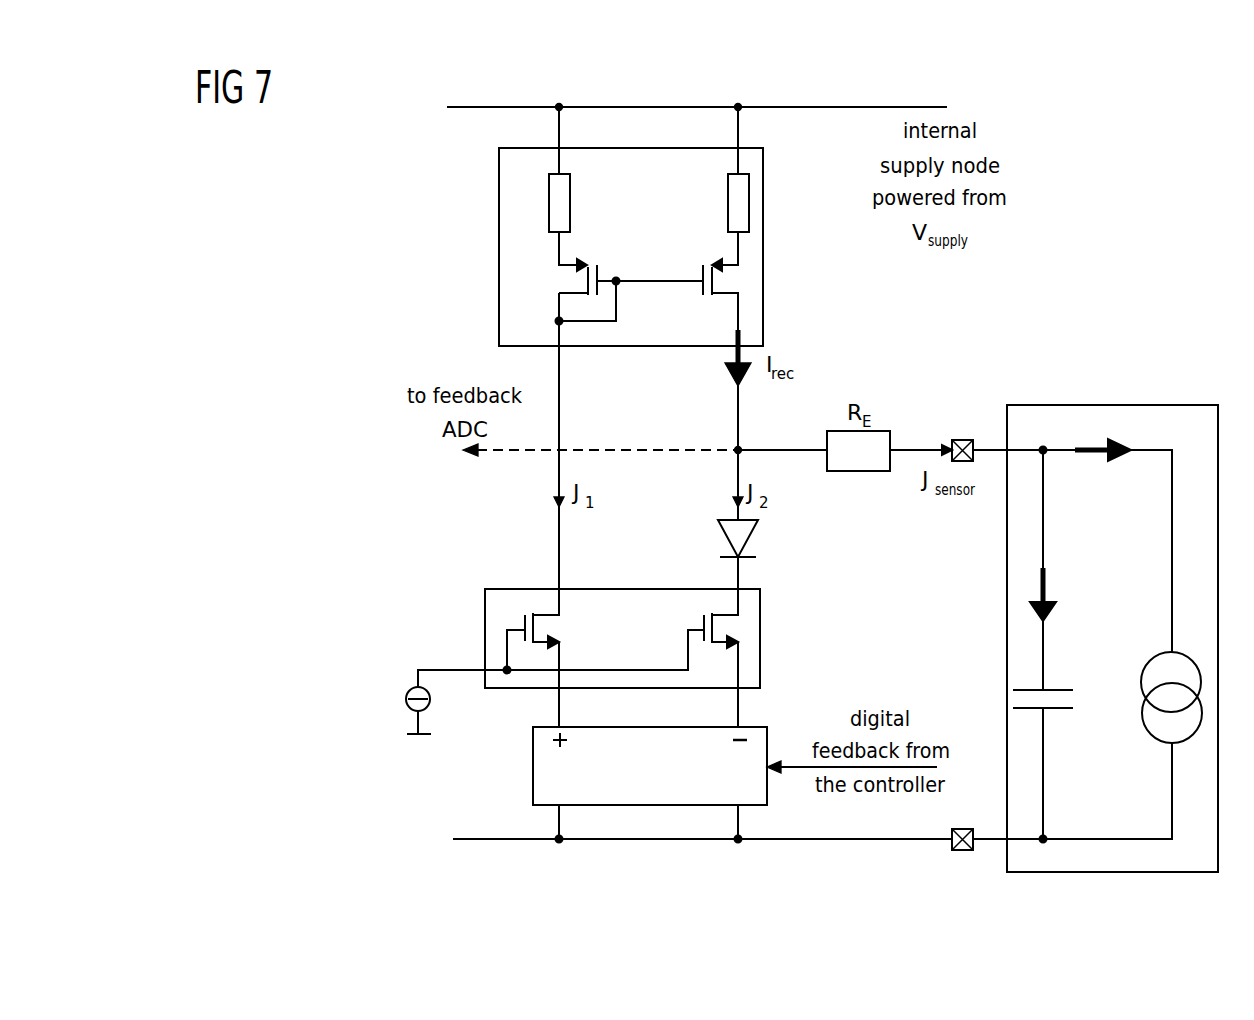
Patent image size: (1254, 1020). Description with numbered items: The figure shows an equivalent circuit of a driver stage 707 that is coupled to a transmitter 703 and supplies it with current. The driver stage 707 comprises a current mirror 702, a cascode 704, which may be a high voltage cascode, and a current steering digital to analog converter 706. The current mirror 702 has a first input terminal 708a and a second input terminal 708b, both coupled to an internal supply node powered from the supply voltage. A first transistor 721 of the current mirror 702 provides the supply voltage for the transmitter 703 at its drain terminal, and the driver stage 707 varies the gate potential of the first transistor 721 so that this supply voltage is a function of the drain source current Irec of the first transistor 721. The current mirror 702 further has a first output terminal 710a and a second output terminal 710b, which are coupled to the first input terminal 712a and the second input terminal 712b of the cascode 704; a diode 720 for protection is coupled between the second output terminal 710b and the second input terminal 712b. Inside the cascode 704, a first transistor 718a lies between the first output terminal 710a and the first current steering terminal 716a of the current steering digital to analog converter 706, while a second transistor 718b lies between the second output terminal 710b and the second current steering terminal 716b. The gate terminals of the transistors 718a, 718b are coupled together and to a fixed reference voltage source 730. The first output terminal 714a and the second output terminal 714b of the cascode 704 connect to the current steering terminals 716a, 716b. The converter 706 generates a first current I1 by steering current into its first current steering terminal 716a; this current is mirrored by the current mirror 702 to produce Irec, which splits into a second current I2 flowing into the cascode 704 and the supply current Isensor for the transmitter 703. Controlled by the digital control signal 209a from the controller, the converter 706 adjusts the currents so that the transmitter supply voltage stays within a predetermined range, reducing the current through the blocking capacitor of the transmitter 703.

The driver stage 707 is at (1147, 156).
The first input terminal 708a is at (559, 147).
The second input terminal 708b is at (738, 147).
The current mirror 702 is at (673, 247).
The first transistor 721 is at (714, 275).
The first output terminal 710a is at (562, 350).
The second output terminal 710b is at (735, 348).
The diode 720 is at (717, 532).
The first input terminal 712a is at (559, 589).
The second input terminal 712b is at (739, 588).
The cascode 704 is at (665, 631).
The first transistor 718a is at (537, 625).
The second transistor 718b is at (703, 620).
The fixed reference voltage source 730 is at (410, 688).
The first output terminal 714a is at (562, 690).
The second output terminal 714b is at (738, 690).
The first current steering terminal 716a is at (558, 724).
The second current steering terminal 716b is at (742, 718).
The current steering digital to analog converter 706 is at (625, 722).
The digital control signal 209a is at (785, 765).
The transmitter 703 is at (1125, 405).